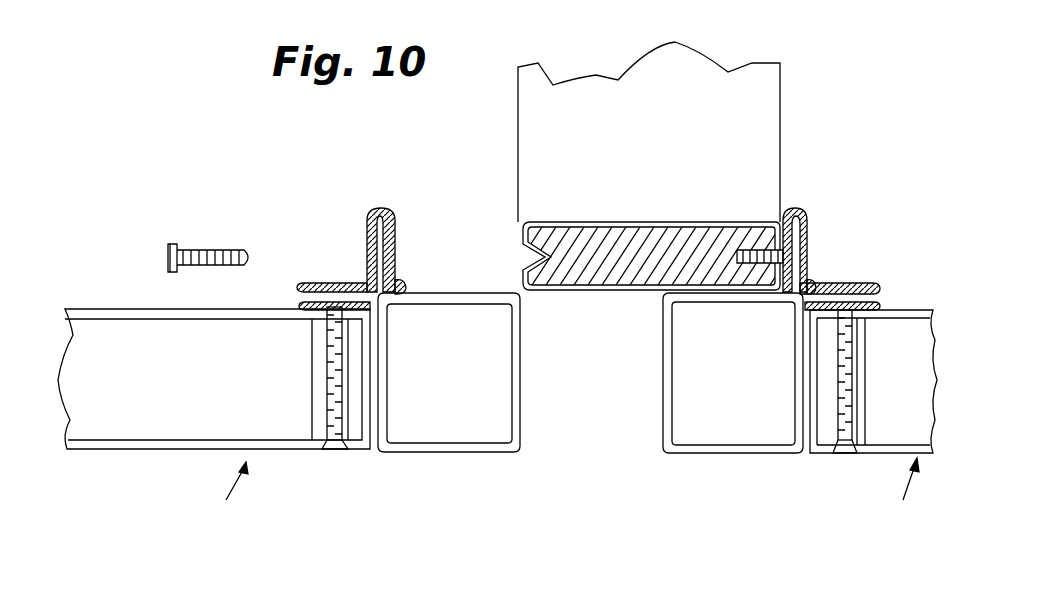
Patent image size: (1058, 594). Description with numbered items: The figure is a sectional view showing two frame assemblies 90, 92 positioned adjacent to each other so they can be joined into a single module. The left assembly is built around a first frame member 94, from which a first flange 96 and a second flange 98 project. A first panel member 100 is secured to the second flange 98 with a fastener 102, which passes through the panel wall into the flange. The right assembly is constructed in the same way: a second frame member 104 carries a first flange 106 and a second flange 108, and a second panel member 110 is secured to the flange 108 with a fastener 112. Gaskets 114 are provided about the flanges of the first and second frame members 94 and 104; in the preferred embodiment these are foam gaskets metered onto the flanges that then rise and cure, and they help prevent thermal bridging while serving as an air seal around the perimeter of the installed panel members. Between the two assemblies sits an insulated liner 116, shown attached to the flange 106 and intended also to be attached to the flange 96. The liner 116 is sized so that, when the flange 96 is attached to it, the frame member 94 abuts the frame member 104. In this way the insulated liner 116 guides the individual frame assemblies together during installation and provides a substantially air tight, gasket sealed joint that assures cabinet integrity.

The frame assembly 90 is at (224, 500).
The frame assembly 92 is at (897, 500).
The first frame member 94 is at (455, 430).
The first flange 96 is at (390, 226).
The second flange 98 is at (311, 282).
The first panel member 100 is at (172, 428).
The fastener 102 is at (333, 448).
The second frame member 104 is at (700, 445).
The first flange 106 is at (801, 233).
The second flange 108 is at (864, 290).
The second panel member 110 is at (884, 445).
The fastener 112 is at (843, 447).
The gasket 114 is at (396, 266).
The insulated liner 116 is at (678, 236).